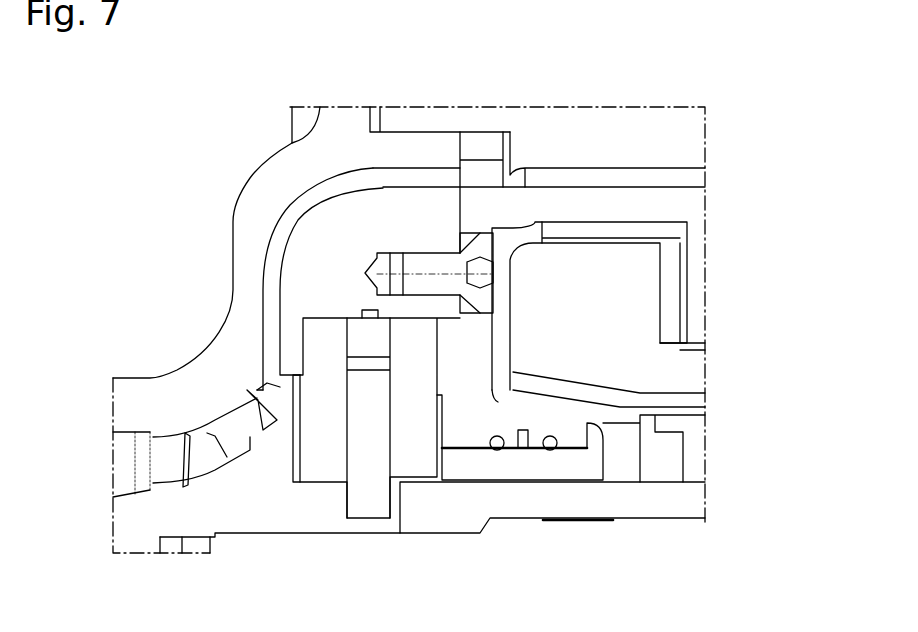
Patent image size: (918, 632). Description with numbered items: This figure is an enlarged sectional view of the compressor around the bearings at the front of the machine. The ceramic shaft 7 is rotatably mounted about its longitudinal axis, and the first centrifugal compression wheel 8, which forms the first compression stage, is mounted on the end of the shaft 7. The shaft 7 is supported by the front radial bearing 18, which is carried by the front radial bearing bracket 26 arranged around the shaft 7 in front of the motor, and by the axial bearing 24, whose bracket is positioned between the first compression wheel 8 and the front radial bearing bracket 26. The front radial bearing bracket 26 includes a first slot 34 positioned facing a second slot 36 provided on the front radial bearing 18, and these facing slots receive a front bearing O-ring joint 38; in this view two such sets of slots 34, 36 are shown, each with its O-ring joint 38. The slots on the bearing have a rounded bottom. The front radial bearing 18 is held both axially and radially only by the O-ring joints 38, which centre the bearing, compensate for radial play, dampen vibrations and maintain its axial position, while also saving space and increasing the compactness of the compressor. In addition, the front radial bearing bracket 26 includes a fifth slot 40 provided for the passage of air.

The ceramic shaft 7 is at (673, 500).
The first centrifugal compression wheel 8 is at (187, 463).
The front radial bearing 18 is at (605, 470).
The axial bearing 24 is at (347, 500).
The front radial bearing bracket 26 is at (495, 327).
The first slot 34 is at (497, 436).
The second slot 36 is at (498, 452).
The front bearing O-ring joint 38 is at (502, 452).
The fifth slot 40 is at (527, 430).